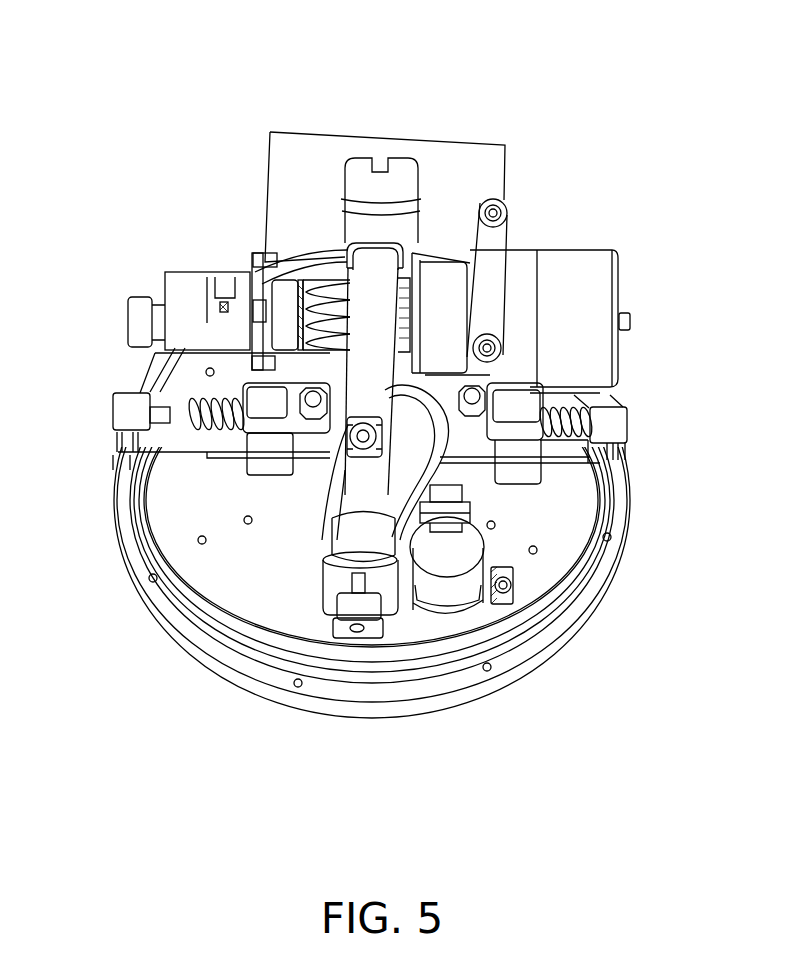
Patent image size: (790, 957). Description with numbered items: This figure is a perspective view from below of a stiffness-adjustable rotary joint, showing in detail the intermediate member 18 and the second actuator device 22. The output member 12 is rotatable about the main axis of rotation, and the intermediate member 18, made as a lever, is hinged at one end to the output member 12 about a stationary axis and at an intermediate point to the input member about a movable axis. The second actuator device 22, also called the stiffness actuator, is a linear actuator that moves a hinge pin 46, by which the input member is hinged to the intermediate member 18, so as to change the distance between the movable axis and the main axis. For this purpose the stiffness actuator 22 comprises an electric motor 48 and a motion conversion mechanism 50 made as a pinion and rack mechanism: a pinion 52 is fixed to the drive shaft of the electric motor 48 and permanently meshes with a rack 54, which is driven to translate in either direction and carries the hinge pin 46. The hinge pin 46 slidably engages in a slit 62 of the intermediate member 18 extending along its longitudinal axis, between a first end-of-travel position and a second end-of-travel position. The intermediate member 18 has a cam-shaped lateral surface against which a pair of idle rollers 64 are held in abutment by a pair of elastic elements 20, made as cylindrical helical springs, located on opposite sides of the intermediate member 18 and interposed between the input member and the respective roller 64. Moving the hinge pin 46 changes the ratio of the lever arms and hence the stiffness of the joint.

The output member 12 is at (262, 583).
The intermediate member 18 is at (470, 455).
The elastic elements 20 is at (205, 385).
The second actuator device 22 is at (202, 262).
The hinge pin 46 is at (442, 478).
The electric motor 48 is at (587, 253).
The motion conversion mechanism 50 is at (420, 240).
The pinion 52 is at (350, 281).
The rack 54 is at (367, 282).
The slit 62 is at (500, 377).
The idle rollers 64 is at (345, 468).